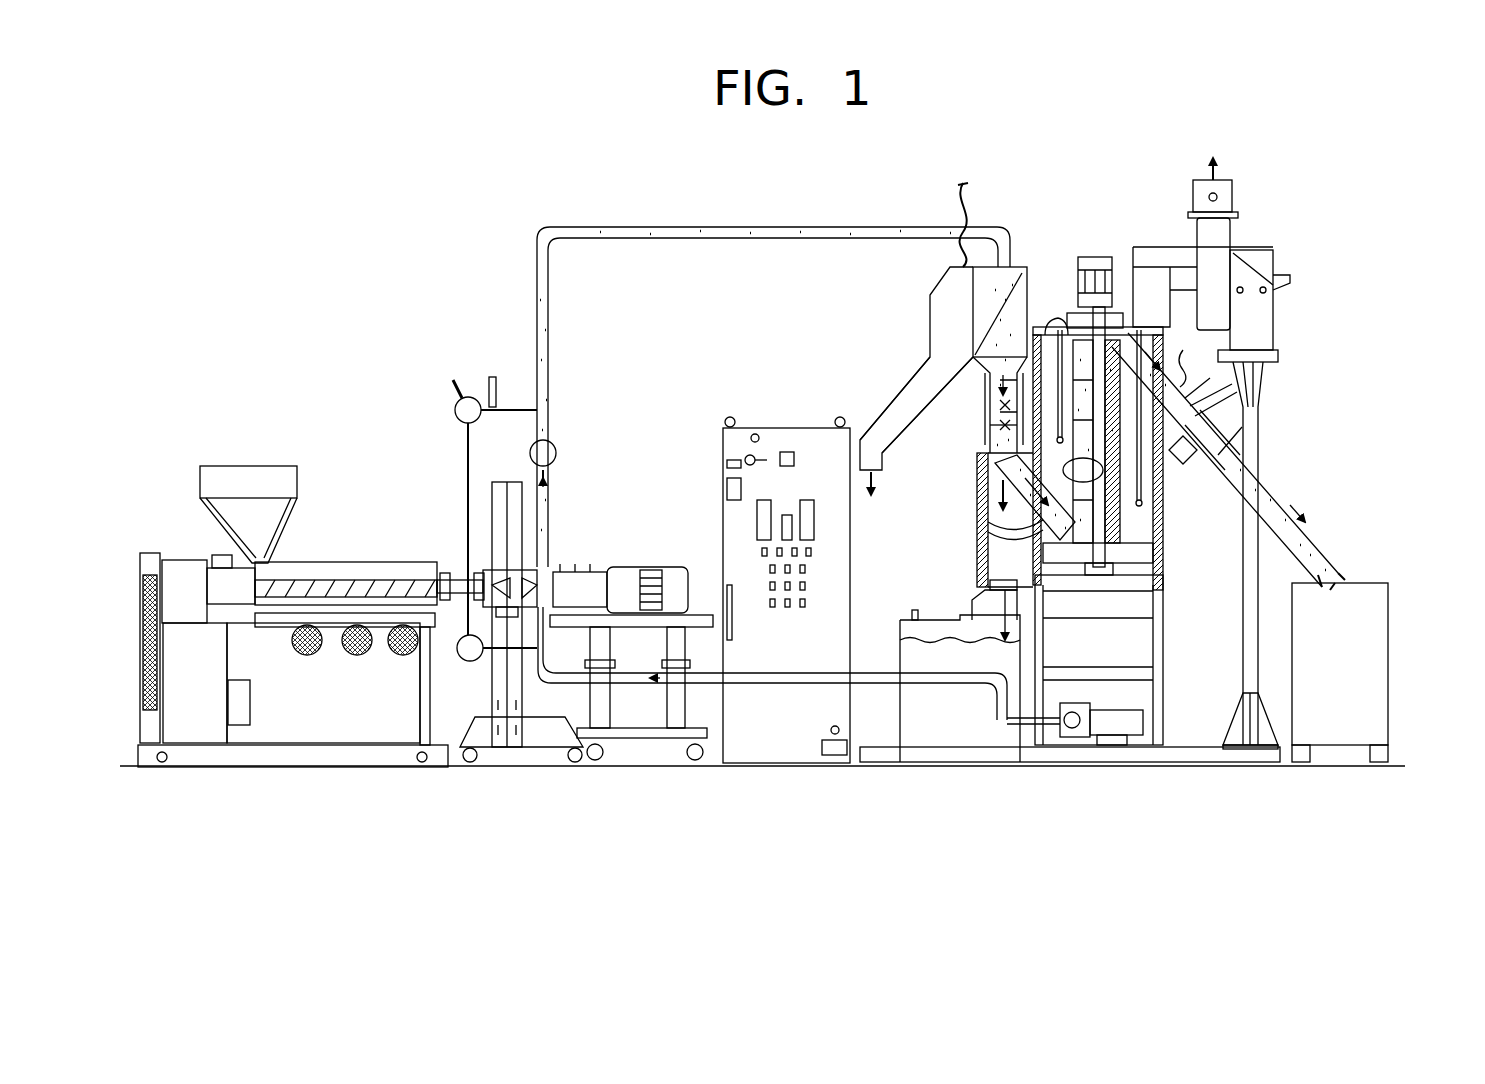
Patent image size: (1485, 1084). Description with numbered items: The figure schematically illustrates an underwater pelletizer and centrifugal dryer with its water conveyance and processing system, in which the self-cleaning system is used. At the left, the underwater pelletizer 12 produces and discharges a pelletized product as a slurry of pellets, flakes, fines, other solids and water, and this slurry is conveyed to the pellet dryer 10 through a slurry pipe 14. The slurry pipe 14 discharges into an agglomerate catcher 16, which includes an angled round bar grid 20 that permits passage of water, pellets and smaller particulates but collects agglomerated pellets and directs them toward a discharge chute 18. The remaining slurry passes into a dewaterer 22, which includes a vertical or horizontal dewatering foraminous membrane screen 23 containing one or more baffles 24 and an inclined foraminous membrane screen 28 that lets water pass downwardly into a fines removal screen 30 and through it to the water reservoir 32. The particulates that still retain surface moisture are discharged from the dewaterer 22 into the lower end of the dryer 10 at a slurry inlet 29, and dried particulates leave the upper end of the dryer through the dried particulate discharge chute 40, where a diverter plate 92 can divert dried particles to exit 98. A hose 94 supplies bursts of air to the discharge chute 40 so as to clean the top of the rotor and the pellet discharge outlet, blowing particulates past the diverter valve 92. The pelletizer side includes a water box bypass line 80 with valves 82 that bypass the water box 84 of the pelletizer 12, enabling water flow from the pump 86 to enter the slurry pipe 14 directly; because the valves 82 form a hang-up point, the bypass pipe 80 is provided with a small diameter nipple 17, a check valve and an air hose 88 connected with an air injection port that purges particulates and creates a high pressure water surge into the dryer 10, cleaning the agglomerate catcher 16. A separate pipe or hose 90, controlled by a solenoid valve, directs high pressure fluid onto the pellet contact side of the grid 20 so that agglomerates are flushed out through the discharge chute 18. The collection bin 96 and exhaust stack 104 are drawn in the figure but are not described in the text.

The dryer 10 is at (1088, 250).
The underwater pelletizer 12 is at (609, 546).
The slurry pipe 14 is at (683, 222).
The agglomerate catcher 16 is at (923, 296).
The small diameter nipple 17 is at (490, 378).
The discharge chute 18 is at (900, 407).
The angled round bar grid 20 is at (1020, 265).
The dewaterer 22 is at (980, 443).
The dewatering foraminous membrane screen 23 is at (983, 428).
The baffles 24 is at (990, 388).
The inclined foraminous membrane screen 28 is at (1028, 520).
The slurry inlet 29 is at (1045, 540).
The fines removal screen 30 is at (993, 615).
The water reservoir 32 is at (900, 628).
The dried particulate discharge chute 40 is at (1300, 510).
The water box bypass line 80 is at (512, 412).
The valves 82 is at (455, 408).
The water box 84 is at (545, 568).
The pump 86 is at (1115, 720).
The air hose 88 is at (492, 368).
The pipe or hose 90 is at (960, 210).
The diverter plate 92 is at (1220, 428).
The hose 94 is at (1183, 368).
The collection bin 96 is at (1370, 695).
The exit 98 is at (1190, 460).
The exhaust stack 104 is at (1222, 230).